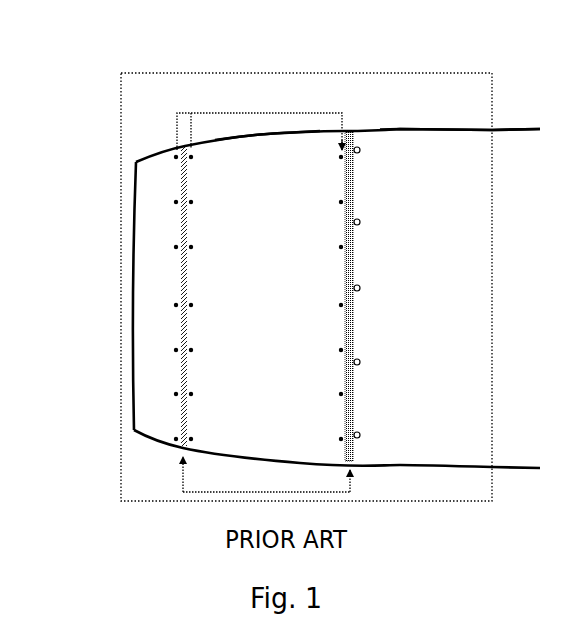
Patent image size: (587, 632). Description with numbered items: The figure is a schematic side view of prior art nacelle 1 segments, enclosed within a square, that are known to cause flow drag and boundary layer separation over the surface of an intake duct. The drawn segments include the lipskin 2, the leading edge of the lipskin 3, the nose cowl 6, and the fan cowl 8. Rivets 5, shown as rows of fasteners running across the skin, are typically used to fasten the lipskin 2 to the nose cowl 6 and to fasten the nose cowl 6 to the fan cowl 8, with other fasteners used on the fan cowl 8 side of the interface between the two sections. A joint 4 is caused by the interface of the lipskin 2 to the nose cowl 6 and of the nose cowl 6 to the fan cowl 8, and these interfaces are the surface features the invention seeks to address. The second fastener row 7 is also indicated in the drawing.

The nacelle 1 is at (117, 72).
The lipskin 2 is at (140, 154).
The leading edge of the lipskin 3 is at (131, 188).
The joint 4 is at (266, 488).
The rivets 5 is at (199, 110).
The nose cowl 6 is at (255, 128).
The second fastener strip 7 is at (357, 145).
The fan cowl 8 is at (403, 126).